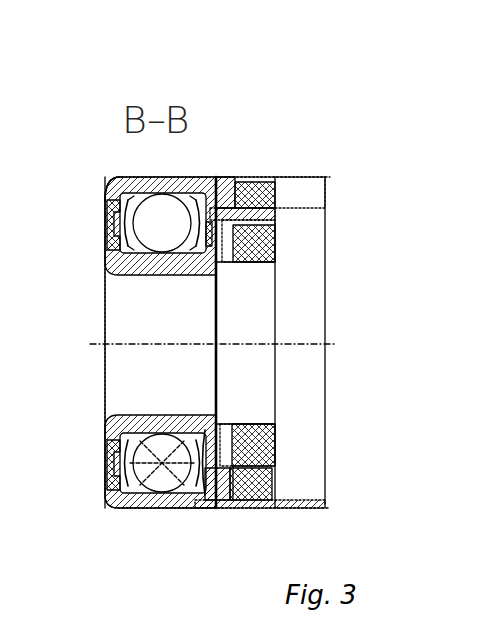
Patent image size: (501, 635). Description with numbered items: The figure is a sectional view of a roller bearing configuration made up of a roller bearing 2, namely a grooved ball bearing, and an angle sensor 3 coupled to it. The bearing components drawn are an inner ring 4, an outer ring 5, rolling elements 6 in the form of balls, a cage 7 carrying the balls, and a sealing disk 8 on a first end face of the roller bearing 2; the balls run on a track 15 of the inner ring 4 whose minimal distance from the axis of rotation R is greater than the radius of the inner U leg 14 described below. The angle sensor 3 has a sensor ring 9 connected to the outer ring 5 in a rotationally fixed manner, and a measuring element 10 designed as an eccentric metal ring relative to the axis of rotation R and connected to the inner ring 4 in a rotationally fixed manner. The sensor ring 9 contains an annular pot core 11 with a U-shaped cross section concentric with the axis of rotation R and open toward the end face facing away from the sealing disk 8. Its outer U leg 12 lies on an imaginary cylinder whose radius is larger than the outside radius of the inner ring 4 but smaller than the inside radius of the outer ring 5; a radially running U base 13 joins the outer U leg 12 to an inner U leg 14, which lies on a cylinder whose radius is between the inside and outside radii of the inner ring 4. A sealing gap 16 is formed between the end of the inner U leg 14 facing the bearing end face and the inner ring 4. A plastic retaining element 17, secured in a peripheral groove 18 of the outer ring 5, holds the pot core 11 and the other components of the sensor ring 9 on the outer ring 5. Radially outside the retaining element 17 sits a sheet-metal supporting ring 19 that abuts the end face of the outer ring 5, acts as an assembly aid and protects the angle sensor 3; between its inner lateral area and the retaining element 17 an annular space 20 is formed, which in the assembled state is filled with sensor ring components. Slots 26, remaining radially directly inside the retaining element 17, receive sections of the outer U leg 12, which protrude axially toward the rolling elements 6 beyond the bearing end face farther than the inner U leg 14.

The roller bearing 2 is at (160, 83).
The angle sensor 3 is at (272, 83).
The inner ring 4 is at (107, 262).
The outer ring 5 is at (107, 190).
The rolling elements 6 is at (130, 268).
The cage 7 is at (143, 225).
The sealing disk 8 is at (107, 222).
The sensor ring 9 is at (282, 165).
The measuring element 10 is at (213, 225).
The pot core 11 is at (277, 418).
The outer U leg 12 is at (258, 473).
The U base 13 is at (277, 443).
The inner U leg 14 is at (250, 422).
The track 15 is at (158, 438).
The sealing gap 16 is at (218, 435).
The retaining element 17 is at (235, 488).
The peripheral groove 18 is at (205, 203).
The supporting ring 19 is at (296, 510).
The annular space 20 is at (283, 198).
The slots 26 is at (283, 220).
The axis of rotation R is at (130, 343).